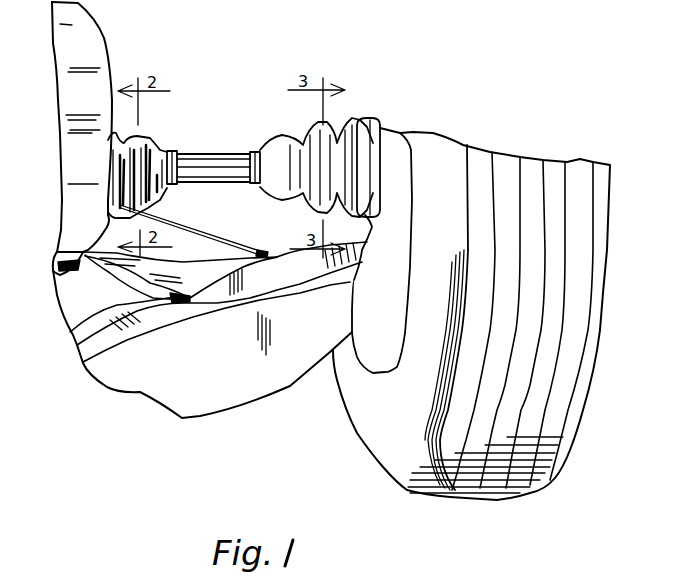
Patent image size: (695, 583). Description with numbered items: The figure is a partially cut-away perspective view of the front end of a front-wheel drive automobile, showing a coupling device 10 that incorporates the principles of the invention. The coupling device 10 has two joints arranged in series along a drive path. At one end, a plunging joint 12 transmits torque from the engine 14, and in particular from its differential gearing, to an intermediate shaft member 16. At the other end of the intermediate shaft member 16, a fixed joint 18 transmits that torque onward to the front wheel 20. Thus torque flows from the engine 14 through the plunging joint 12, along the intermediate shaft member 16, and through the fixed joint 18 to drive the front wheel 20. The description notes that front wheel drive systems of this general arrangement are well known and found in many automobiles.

The coupling device 10 is at (194, 143).
The plunging joint 12 is at (137, 137).
The engine 14 is at (103, 44).
The intermediate shaft member 16 is at (206, 183).
The fixed joint 18 is at (342, 120).
The front wheel 20 is at (608, 217).